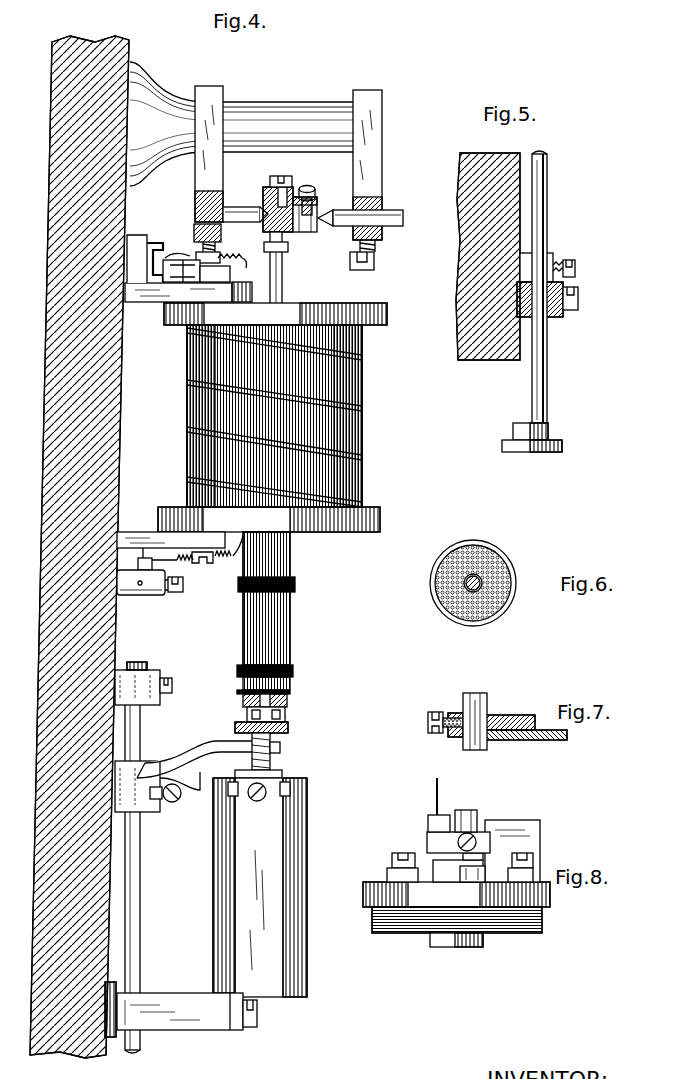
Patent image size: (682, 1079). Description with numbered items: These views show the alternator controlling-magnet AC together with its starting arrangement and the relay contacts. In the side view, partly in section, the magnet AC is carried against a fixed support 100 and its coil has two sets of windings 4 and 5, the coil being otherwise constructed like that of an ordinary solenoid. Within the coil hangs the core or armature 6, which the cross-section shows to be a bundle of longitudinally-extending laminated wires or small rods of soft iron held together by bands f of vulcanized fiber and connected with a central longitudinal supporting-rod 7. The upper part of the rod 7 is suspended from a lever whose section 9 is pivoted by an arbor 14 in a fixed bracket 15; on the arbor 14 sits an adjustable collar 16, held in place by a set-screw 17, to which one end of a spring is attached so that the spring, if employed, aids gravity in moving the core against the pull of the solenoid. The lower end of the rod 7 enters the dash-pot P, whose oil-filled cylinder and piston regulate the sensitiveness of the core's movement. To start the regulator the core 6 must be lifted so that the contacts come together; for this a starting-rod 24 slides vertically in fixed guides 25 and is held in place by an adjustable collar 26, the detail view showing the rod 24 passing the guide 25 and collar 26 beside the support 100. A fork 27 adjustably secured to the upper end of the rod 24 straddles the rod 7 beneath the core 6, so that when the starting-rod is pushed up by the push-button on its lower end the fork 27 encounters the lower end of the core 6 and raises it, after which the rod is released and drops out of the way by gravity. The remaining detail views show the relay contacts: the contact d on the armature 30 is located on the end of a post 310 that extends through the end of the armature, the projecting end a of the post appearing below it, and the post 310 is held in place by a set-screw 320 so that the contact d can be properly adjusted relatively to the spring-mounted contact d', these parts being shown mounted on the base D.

In FIG. 4, the wall support 100 is at (46, 493).
In FIG. 5, the wall support 100 is at (466, 261).
In FIG. 4, the arbor 14 is at (236, 212).
In FIG. 4, the fixed bracket 15 is at (382, 193).
In FIG. 4, the adjustable collar 16 is at (294, 232).
In FIG. 4, the set-screw 17 is at (313, 197).
In FIG. 4, the lever-section 9 is at (263, 227).
In FIG. 4, the supporting-rod 7 is at (282, 292).
In FIG. 6, the supporting-rod 7 is at (508, 574).
In FIG. 4, the winding 4 is at (362, 447).
In FIG. 4, the winding 5 is at (362, 357).
In FIG. 4, the alternator controlling-magnet AC is at (360, 479).
In FIG. 4, the bands f is at (295, 584).
In FIG. 6, the bands f is at (432, 583).
In FIG. 4, the core 6 is at (290, 630).
In FIG. 4, the fixed guides 25 is at (147, 672).
In FIG. 5, the fixed guides 25 is at (549, 320).
In FIG. 5, the adjustable collar 26 is at (553, 253).
In FIG. 4, the fork 27 is at (203, 787).
In FIG. 4, the starting-rod 24 is at (140, 915).
In FIG. 5, the starting-rod 24 is at (548, 206).
In FIG. 4, the dash-pot P is at (303, 903).
In FIG. 7, the post 310 is at (490, 715).
In FIG. 8, the post 310 is at (468, 811).
In FIG. 7, the set-screw 320 is at (433, 739).
In FIG. 8, the set-screw 320 is at (427, 840).
In FIG. 7, the armature 30 is at (522, 740).
In FIG. 7, the stud a is at (475, 750).
In FIG. 8, the contact d is at (467, 866).
In FIG. 8, the spring-mounted contact d' is at (481, 874).
In FIG. 8, the disc base D is at (497, 934).